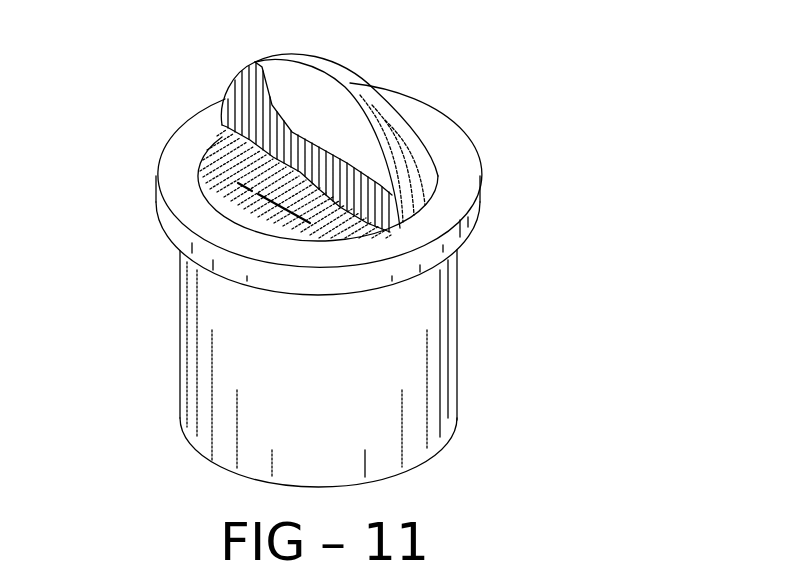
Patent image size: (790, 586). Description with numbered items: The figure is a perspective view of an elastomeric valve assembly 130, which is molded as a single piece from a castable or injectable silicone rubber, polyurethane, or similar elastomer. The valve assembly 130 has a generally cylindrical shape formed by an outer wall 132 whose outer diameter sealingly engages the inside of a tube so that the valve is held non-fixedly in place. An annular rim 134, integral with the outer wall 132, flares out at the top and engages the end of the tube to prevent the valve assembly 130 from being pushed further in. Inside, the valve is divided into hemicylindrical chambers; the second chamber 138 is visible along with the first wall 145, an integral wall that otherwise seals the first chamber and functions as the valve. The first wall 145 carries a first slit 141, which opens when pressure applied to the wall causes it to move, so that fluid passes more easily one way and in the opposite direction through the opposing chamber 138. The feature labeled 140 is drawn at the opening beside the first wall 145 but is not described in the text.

The valve assembly 130 is at (585, 117).
The outer wall 132 is at (458, 370).
The annular rim 134 is at (412, 274).
The second chamber 138 is at (433, 178).
The opening 140 is at (212, 162).
The first slit 141 is at (248, 202).
The first wall 145 is at (240, 73).